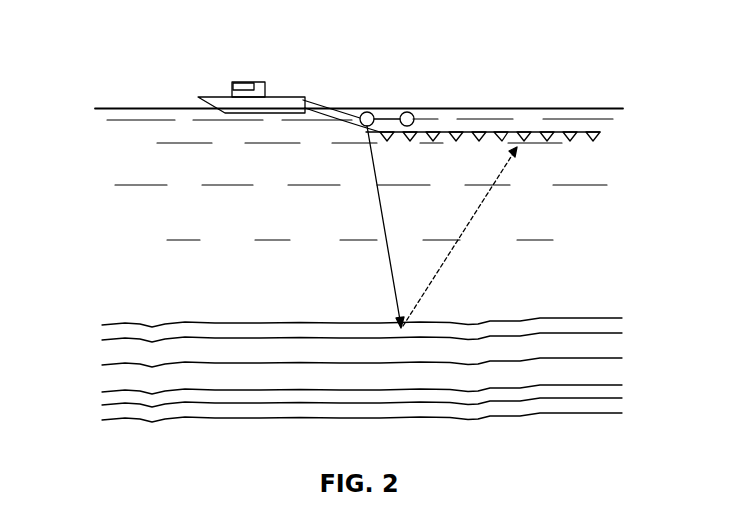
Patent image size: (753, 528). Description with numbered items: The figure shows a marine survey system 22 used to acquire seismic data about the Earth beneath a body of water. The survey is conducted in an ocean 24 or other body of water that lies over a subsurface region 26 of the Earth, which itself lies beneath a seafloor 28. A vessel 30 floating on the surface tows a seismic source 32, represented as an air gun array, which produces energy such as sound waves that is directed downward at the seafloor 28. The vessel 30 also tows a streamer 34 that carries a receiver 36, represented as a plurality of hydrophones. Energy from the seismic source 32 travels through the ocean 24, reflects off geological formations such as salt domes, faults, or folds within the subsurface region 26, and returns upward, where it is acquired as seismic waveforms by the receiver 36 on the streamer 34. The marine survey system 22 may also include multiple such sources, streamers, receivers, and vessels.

The marine survey system 22 is at (611, 22).
The ocean 24 is at (282, 218).
The subsurface region 26 is at (93, 303).
The seafloor 28 is at (262, 323).
The vessel 30 is at (248, 82).
The seismic source 32 is at (367, 112).
The streamer 34 is at (628, 117).
The receiver 36 is at (410, 141).